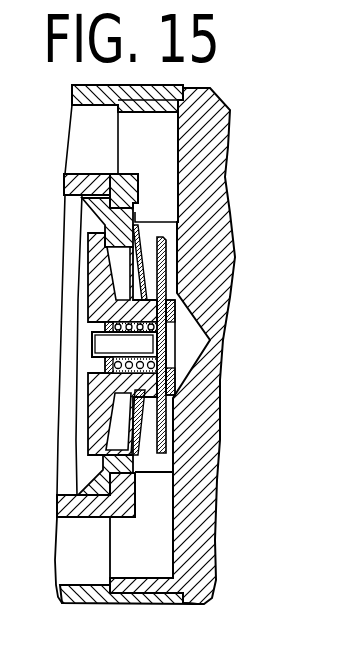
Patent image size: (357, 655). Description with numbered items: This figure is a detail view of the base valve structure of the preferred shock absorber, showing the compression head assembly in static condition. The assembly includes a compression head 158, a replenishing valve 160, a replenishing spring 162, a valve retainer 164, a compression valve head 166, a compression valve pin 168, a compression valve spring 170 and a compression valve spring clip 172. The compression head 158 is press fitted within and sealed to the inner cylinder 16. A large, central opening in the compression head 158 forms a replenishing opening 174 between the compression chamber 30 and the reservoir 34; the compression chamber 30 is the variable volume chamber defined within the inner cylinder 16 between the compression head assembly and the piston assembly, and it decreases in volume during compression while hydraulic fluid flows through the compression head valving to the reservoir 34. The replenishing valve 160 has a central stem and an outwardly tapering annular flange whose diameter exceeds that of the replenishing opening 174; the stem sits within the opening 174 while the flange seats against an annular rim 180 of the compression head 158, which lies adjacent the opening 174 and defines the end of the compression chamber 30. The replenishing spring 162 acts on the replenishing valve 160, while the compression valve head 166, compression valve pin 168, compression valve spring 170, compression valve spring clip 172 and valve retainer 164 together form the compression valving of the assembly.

The compression head 158 is at (137, 195).
The annular rim 180 is at (66, 198).
The compression chamber 30 is at (70, 443).
The compression valve spring clip 172 is at (90, 288).
The compression valve head 166 is at (88, 322).
The valve retainer 164 is at (183, 258).
The replenishing valve 160 is at (100, 405).
The replenishing opening 174 is at (120, 432).
The compression valve pin 168 is at (105, 327).
The compression valve spring 170 is at (100, 372).
The replenishing spring 162 is at (145, 278).
The inner cylinder 16 is at (92, 507).
The reservoir 34 is at (78, 543).